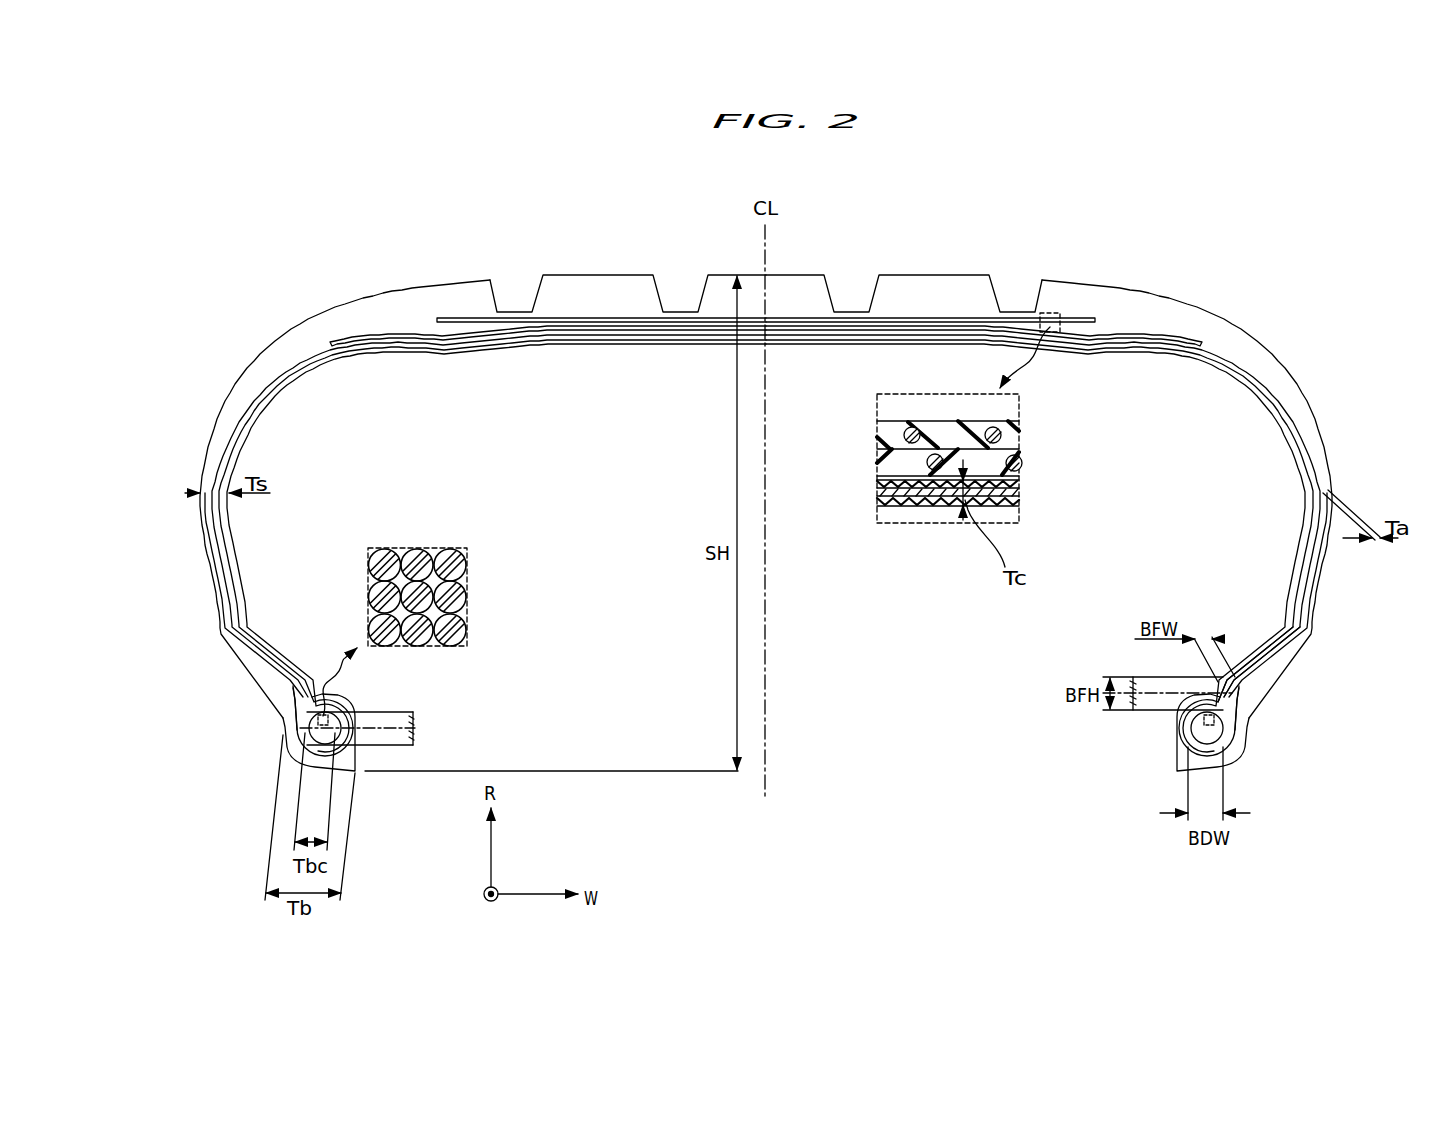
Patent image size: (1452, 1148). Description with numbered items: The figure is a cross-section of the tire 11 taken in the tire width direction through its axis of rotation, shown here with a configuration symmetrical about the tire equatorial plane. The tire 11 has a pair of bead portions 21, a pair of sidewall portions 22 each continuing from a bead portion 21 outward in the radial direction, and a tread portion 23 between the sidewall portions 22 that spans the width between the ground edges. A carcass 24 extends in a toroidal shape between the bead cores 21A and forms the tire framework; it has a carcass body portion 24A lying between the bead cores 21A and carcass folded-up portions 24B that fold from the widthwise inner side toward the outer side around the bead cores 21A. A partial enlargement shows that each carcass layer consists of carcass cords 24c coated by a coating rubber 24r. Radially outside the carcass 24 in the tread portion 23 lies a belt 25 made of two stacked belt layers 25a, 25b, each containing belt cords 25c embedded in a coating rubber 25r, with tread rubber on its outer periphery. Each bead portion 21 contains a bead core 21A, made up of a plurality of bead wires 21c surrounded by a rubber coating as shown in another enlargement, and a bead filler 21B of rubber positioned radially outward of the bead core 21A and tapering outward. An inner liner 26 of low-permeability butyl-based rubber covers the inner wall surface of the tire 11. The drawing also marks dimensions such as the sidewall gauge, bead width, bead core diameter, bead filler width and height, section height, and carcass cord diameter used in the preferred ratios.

The tire 11 is at (387, 216).
The bead portion 21 is at (262, 692).
The bead core 21A is at (285, 727).
The bead filler 21B is at (303, 690).
The bead wire 21c is at (462, 590).
The sidewall portion 22 is at (200, 492).
The tread portion 23 is at (890, 273).
The carcass 24 is at (1019, 488).
The carcass body portion 24A is at (1227, 648).
The carcass folded-up portion 24B is at (1267, 676).
The carcass cord 24c is at (910, 500).
The coating rubber 24r is at (877, 496).
The belt 25 is at (960, 318).
The belt layer 25a is at (1019, 427).
The belt layer 25b is at (1019, 458).
The belt cord 25c is at (902, 432).
The coating rubber 25r is at (928, 420).
The inner liner 26 is at (1265, 396).